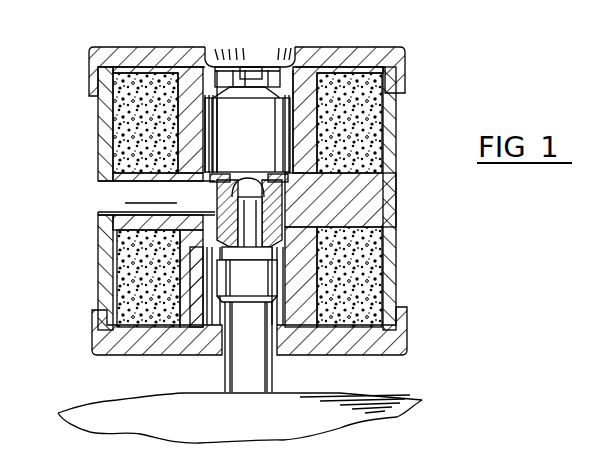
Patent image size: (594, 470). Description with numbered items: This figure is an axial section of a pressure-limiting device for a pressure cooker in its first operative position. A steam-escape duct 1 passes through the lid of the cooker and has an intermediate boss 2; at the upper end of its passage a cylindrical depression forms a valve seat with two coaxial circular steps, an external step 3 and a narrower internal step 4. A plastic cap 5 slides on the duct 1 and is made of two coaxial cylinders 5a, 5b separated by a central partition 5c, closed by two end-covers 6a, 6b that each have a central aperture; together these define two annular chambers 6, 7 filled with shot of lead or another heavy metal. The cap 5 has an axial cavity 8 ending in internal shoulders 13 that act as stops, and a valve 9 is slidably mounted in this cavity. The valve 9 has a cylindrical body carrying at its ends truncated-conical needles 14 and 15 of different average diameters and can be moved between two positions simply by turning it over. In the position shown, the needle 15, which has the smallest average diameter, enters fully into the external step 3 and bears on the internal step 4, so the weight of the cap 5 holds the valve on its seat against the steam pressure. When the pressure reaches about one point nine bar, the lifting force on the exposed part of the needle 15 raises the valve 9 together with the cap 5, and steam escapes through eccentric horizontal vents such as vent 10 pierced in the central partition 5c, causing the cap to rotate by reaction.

The steam-escape duct 1 is at (248, 347).
The intermediate boss 2 is at (238, 250).
The external step 3 is at (283, 191).
The internal step 4 is at (300, 216).
The cap 5 is at (254, 198).
The coaxial cylinder 5a is at (100, 122).
The coaxial cylinder 5b is at (101, 297).
The central partition 5c is at (396, 221).
The annular chamber 6 is at (355, 118).
The end-cover 6a is at (363, 342).
The end-cover 6b is at (405, 62).
The annular chamber 7 is at (360, 289).
The axial cavity 8 is at (137, 265).
The valve 9 is at (247, 119).
The horizontal vent 10 is at (130, 213).
The internal shoulder 13 is at (214, 103).
The truncated-conical needle 14 is at (248, 80).
The truncated-conical needle 15 is at (217, 200).